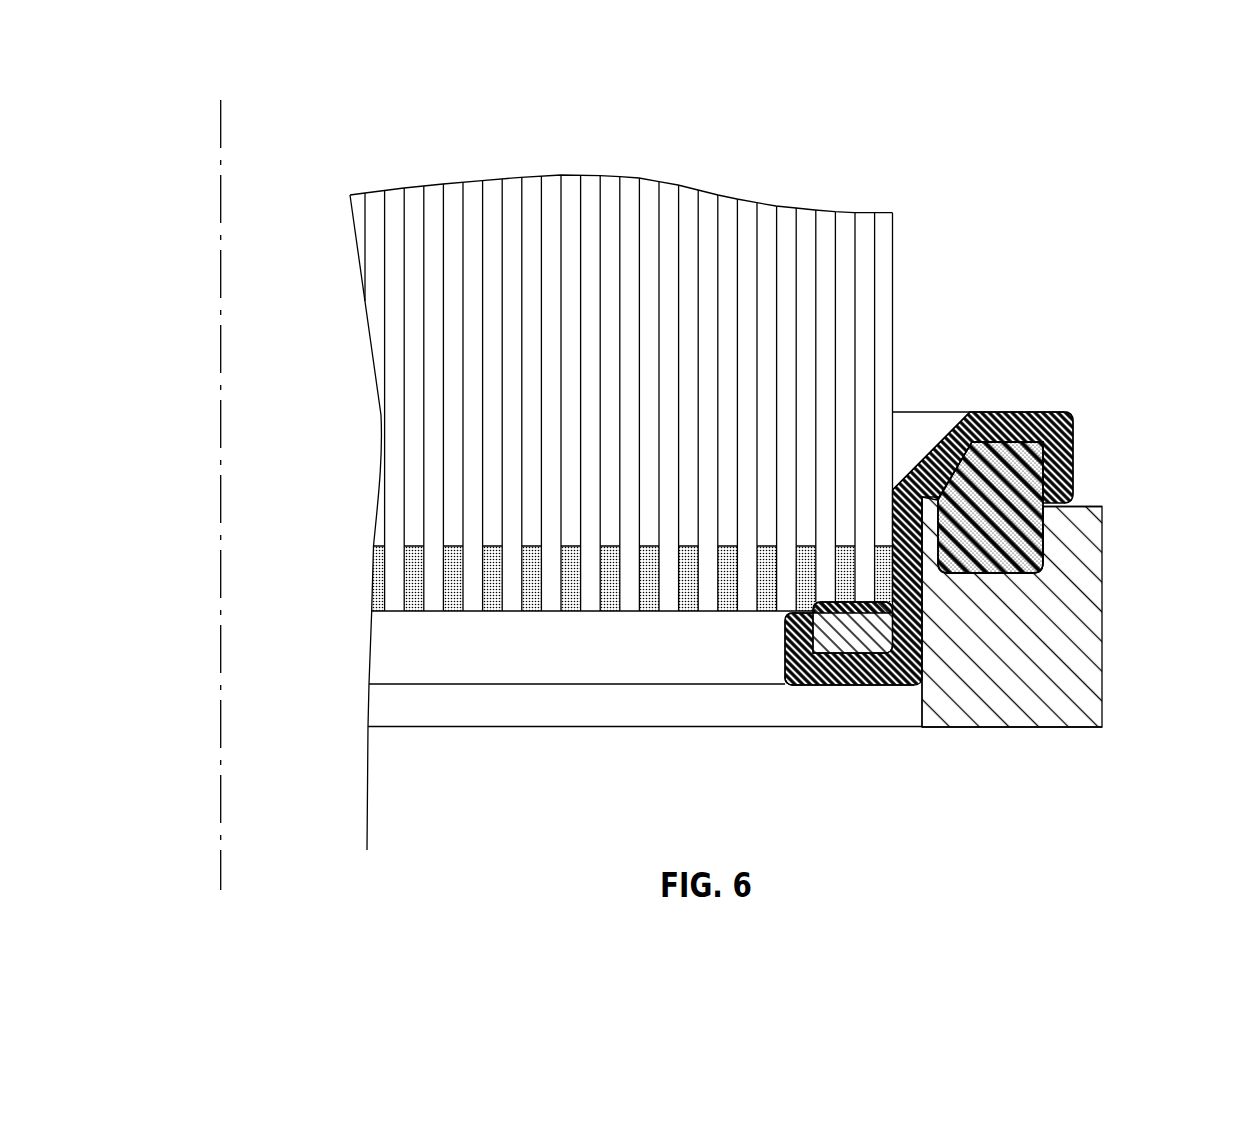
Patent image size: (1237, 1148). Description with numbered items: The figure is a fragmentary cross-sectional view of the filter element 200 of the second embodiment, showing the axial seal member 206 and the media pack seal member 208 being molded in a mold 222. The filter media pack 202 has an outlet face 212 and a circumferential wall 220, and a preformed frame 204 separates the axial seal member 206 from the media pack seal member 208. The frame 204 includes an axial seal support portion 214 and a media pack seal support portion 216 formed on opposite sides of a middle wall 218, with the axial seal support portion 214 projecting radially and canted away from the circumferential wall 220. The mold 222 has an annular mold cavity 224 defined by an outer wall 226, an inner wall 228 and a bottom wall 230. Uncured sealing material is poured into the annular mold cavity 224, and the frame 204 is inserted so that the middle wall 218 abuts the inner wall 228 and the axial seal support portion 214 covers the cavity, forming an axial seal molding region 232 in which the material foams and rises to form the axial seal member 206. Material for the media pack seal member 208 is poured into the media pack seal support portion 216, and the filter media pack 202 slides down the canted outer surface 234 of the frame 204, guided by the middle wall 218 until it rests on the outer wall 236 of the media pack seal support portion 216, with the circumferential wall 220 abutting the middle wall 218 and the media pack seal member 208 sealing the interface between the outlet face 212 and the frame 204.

The filter element 200 is at (438, 152).
The filter media pack 202 is at (373, 271).
The frame 204 is at (1061, 413).
The axial seal member 206 is at (1073, 423).
The media pack seal member 208 is at (785, 654).
The outlet face 212 is at (510, 611).
The axial seal support portion 214 is at (997, 430).
The media pack seal support portion 216 is at (825, 685).
The middle wall 218 is at (930, 535).
The circumferential wall 220 is at (892, 242).
The mold 222 is at (1065, 648).
The annular mold cavity 224 is at (1047, 525).
The outer wall 226 is at (1078, 566).
The inner wall 228 is at (1013, 575).
The bottom wall 230 is at (1013, 575).
The axial seal molding region 232 is at (1073, 450).
The canted outer surface 234 is at (920, 460).
The outer wall 236 is at (793, 685).